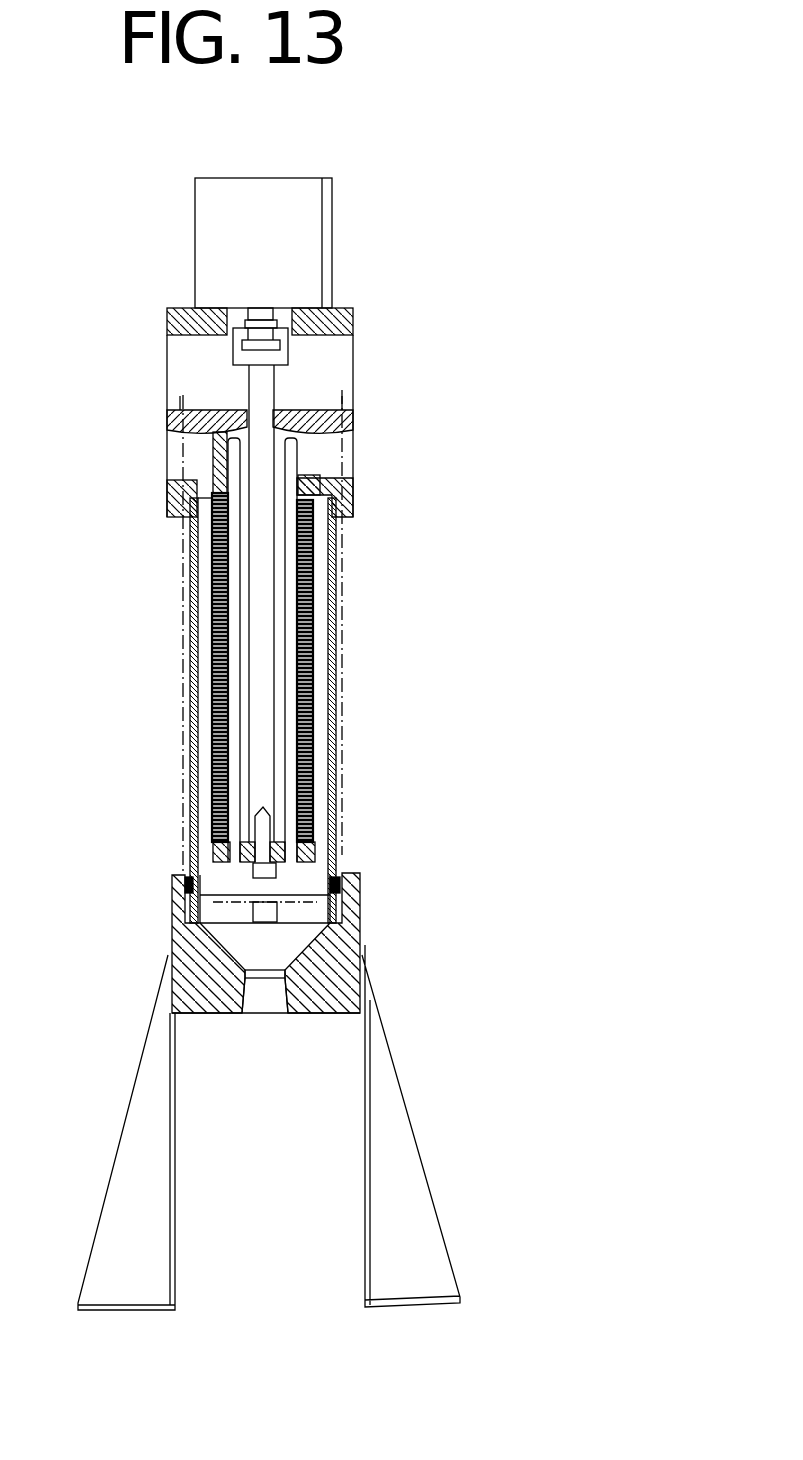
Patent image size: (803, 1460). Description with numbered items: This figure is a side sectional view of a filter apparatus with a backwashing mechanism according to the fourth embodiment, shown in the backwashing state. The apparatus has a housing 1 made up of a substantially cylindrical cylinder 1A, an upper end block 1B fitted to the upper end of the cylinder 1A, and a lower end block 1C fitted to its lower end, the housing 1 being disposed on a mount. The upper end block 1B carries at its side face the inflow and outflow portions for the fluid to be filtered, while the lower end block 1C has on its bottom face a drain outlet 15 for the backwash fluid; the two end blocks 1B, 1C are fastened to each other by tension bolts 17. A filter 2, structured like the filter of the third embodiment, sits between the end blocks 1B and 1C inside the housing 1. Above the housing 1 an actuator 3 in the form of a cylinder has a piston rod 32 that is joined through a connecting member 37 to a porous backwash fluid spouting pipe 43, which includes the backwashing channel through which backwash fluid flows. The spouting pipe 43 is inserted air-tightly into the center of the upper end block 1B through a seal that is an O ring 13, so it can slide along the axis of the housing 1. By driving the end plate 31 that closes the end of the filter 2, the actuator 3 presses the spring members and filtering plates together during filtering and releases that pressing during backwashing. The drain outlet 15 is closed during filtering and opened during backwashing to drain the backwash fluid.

The housing 1 is at (392, 624).
The cylinder 1A is at (178, 673).
The upper end block 1B is at (368, 317).
The lower end block 1C is at (355, 907).
The filter 2 is at (332, 696).
The actuator 3 is at (268, 166).
The O ring 13 is at (243, 412).
The drain outlet 15 is at (268, 1013).
The tension bolts 17 is at (183, 772).
The end plate 31 is at (305, 850).
The piston rod 32 is at (247, 311).
The connecting member 37 is at (233, 345).
The backwash fluid spouting pipe 43 is at (270, 605).